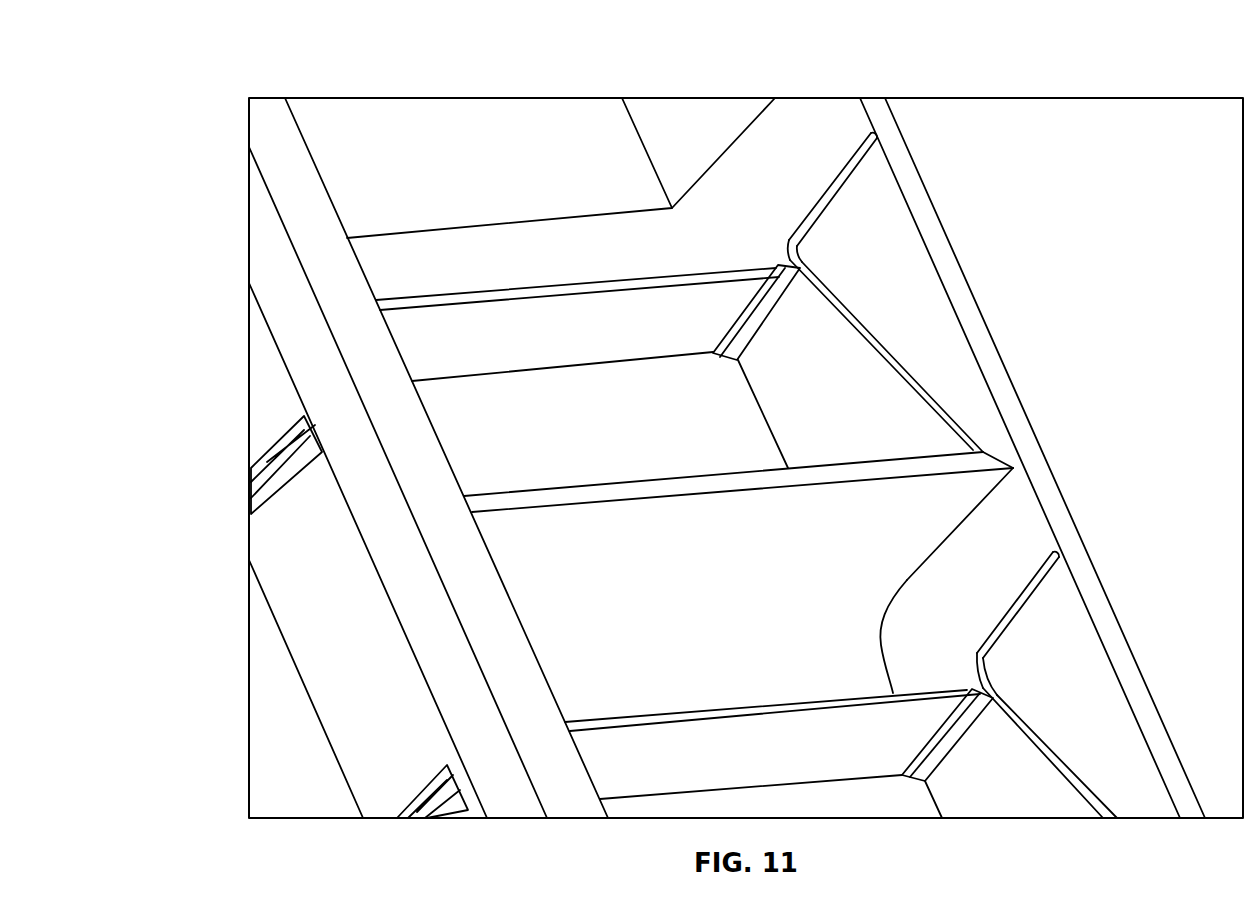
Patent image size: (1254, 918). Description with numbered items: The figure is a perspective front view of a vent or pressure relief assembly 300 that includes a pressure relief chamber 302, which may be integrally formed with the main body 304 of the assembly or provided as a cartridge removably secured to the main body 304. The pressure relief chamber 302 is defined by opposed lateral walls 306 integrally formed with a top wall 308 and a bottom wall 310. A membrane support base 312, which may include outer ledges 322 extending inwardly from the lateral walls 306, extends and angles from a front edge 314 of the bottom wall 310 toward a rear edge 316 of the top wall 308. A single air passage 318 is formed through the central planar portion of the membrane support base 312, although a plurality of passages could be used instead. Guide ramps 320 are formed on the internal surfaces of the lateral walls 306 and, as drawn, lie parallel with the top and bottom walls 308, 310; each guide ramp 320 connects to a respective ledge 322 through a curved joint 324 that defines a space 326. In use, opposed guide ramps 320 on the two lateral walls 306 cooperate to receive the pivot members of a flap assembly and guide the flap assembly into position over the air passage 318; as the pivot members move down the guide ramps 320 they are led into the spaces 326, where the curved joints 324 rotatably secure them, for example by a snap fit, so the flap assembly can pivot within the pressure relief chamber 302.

The pressure relief assembly 300 is at (218, 139).
The pressure relief chamber 302 is at (785, 152).
The main body 304 is at (312, 608).
The lateral walls 306 is at (371, 422).
The top wall 308 is at (800, 247).
The bottom wall 310 is at (983, 465).
The membrane support base 312 is at (935, 397).
The front edge 314 is at (987, 485).
The rear edge 316 is at (768, 265).
The air passage 318 is at (563, 425).
The guide ramps 320 is at (852, 174).
The ledges 322 is at (833, 300).
The curved joint 324 is at (872, 135).
The space 326 is at (793, 238).